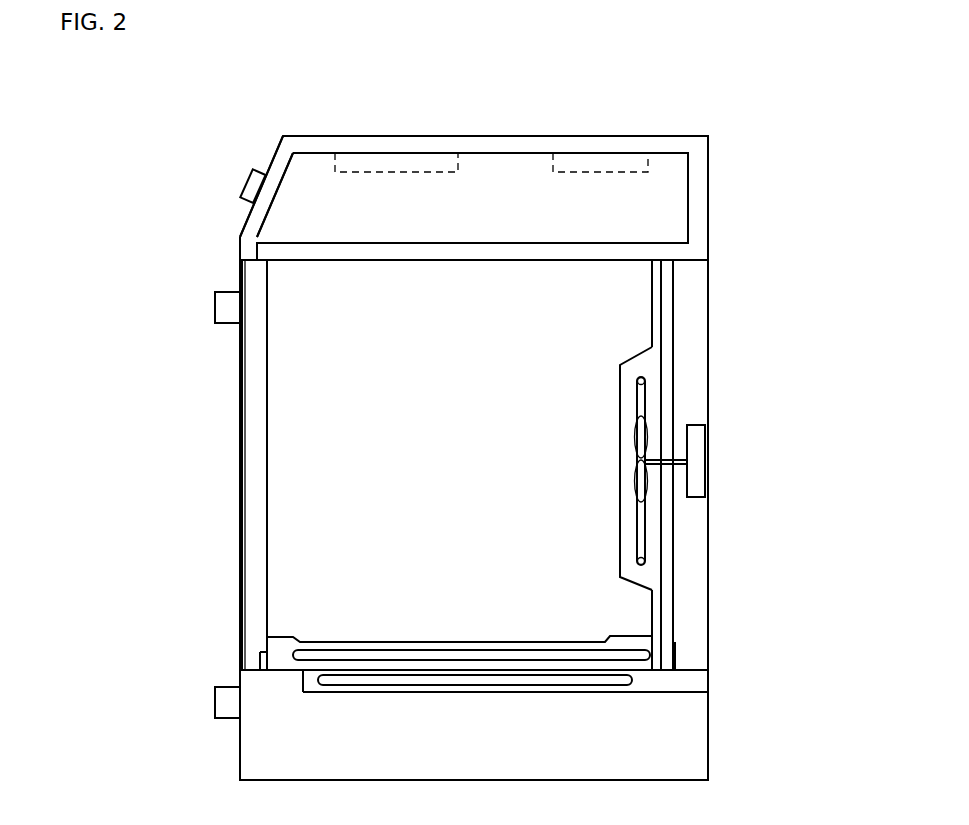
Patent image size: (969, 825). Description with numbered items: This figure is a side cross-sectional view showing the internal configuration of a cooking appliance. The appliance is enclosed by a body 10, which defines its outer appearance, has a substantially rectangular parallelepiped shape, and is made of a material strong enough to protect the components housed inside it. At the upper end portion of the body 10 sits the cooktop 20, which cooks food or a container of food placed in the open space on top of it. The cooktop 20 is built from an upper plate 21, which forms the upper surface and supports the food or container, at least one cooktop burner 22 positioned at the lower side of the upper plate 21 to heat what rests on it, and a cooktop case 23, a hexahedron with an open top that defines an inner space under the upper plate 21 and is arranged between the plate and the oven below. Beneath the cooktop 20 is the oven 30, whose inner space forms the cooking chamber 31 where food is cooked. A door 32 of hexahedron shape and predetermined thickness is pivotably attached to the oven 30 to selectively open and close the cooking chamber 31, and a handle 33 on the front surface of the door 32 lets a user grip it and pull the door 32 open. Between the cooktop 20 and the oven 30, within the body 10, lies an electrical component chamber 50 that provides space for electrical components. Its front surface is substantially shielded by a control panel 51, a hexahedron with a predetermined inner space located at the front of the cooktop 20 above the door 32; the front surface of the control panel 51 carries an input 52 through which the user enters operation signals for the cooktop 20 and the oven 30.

The body 10 is at (728, 262).
The cooktop 20 is at (457, 126).
The upper plate 21 is at (543, 150).
The cooktop burner 22 is at (612, 172).
The cooktop case 23 is at (697, 195).
The oven 30 is at (236, 463).
The cooking chamber 31 is at (445, 451).
The door 32 is at (242, 590).
The handle 33 is at (223, 308).
The electrical component chamber 50 is at (470, 221).
The control panel 51 is at (268, 147).
The input 52 is at (247, 183).